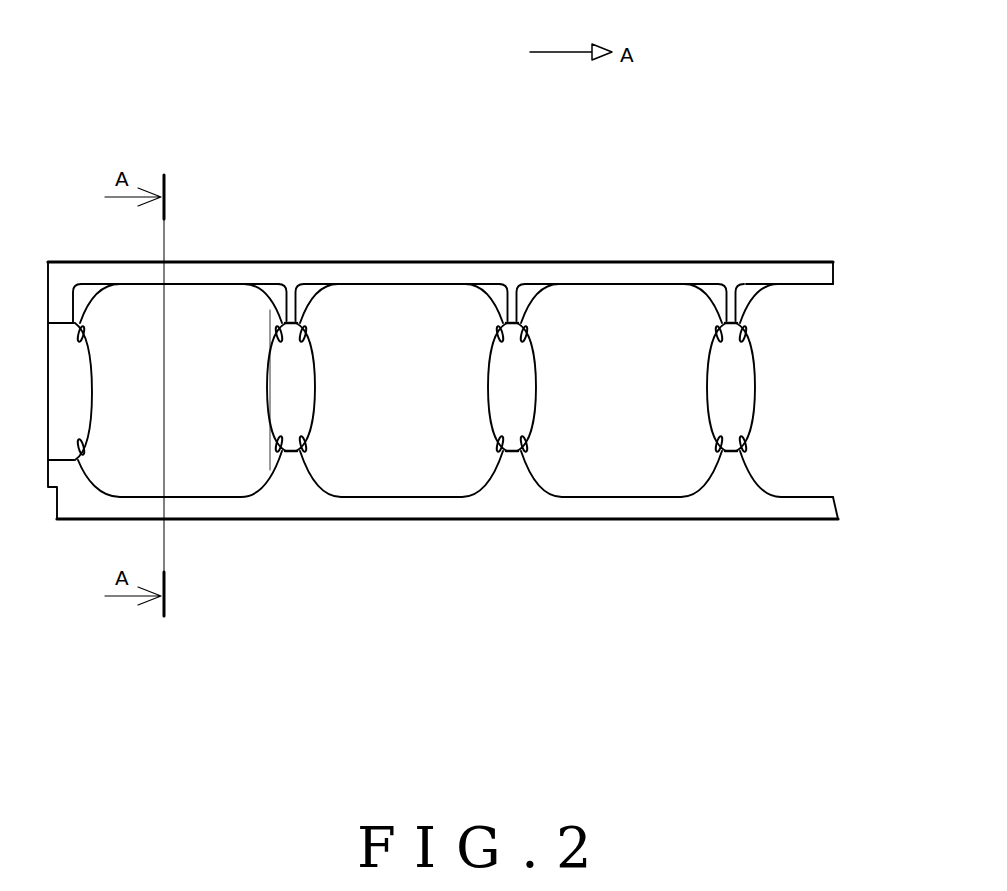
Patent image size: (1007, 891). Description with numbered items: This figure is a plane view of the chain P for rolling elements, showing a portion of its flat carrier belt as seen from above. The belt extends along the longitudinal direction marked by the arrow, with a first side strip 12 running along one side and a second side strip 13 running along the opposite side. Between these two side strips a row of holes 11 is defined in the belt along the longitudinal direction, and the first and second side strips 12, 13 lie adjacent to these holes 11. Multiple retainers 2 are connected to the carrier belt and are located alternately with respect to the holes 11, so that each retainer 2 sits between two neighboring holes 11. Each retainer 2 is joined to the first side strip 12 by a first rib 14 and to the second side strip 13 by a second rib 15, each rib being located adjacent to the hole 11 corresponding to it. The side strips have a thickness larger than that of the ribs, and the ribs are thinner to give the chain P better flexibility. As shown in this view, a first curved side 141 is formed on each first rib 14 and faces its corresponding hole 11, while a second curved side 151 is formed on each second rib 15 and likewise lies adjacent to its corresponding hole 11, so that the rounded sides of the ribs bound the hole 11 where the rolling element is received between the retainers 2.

The chain P is at (350, 130).
The retainer 2 is at (728, 371).
The hole 11 is at (400, 311).
The first side strip 12 is at (588, 272).
The second side strip 13 is at (617, 507).
The first rib 14 is at (308, 290).
The first curved side 141 is at (327, 297).
The second rib 15 is at (313, 483).
The second curved side 151 is at (322, 486).